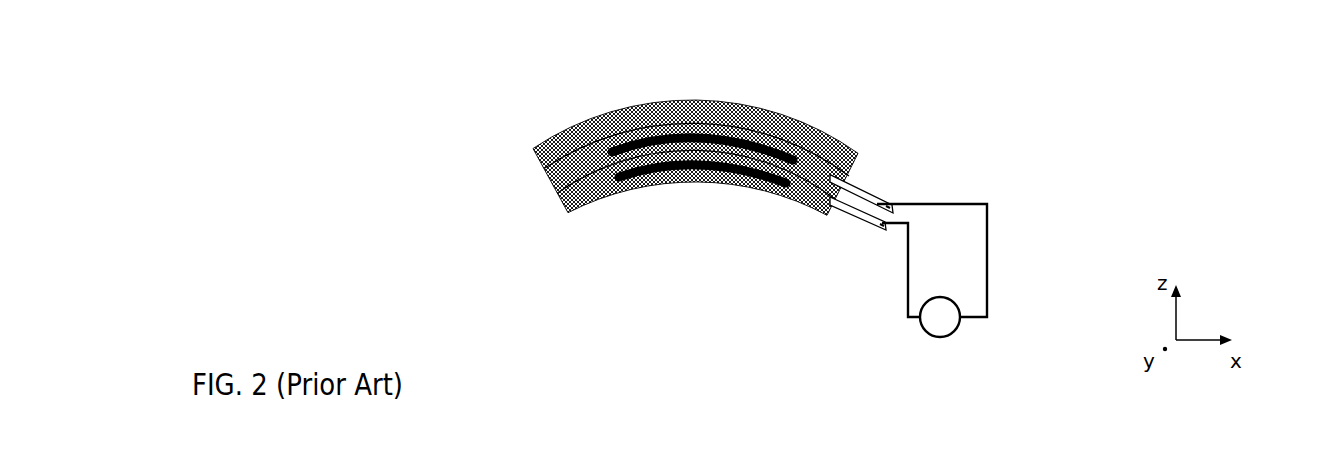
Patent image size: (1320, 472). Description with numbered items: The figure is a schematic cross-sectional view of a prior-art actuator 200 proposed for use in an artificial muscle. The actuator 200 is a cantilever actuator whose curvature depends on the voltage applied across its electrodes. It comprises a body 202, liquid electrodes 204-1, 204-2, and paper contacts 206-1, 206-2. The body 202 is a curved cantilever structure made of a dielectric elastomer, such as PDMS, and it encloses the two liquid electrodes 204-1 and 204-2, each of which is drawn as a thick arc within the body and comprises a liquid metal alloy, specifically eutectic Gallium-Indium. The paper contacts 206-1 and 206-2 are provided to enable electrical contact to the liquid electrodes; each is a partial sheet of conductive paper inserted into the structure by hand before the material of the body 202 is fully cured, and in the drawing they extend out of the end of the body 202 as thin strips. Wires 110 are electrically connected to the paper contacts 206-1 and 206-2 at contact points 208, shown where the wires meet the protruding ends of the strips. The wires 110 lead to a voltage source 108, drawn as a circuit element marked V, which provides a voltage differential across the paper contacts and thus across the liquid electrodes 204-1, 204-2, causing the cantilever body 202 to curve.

The actuator 200 is at (440, 74).
The body 202 is at (546, 170).
The liquid electrode 204-1 is at (644, 141).
The liquid electrode 204-2 is at (768, 186).
The paper contact 206-1 is at (864, 196).
The paper contact 206-2 is at (870, 203).
The contact points 208 is at (854, 236).
The wires 110 is at (908, 285).
The voltage source 108 is at (930, 334).